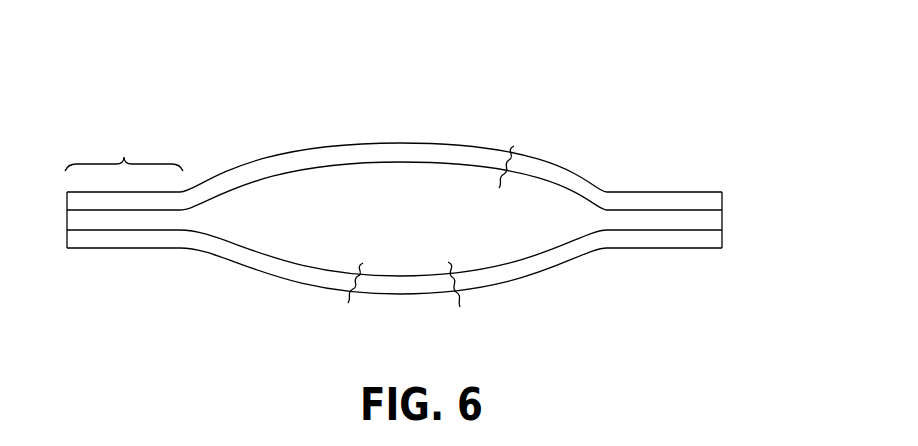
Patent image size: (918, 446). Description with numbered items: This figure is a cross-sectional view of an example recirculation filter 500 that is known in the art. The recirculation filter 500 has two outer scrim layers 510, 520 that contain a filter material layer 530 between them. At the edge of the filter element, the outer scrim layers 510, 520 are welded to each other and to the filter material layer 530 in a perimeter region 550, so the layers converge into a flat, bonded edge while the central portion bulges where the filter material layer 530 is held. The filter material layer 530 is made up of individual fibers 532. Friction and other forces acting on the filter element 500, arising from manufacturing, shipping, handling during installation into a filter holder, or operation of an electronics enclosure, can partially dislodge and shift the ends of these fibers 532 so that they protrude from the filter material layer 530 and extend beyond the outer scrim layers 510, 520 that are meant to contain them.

The recirculation filter 500 is at (300, 104).
The outer scrim layer 510 is at (723, 246).
The outer scrim layer 520 is at (681, 193).
The filter material layer 530 is at (723, 223).
The fibers 532 is at (533, 160).
The perimeter region 550 is at (124, 154).